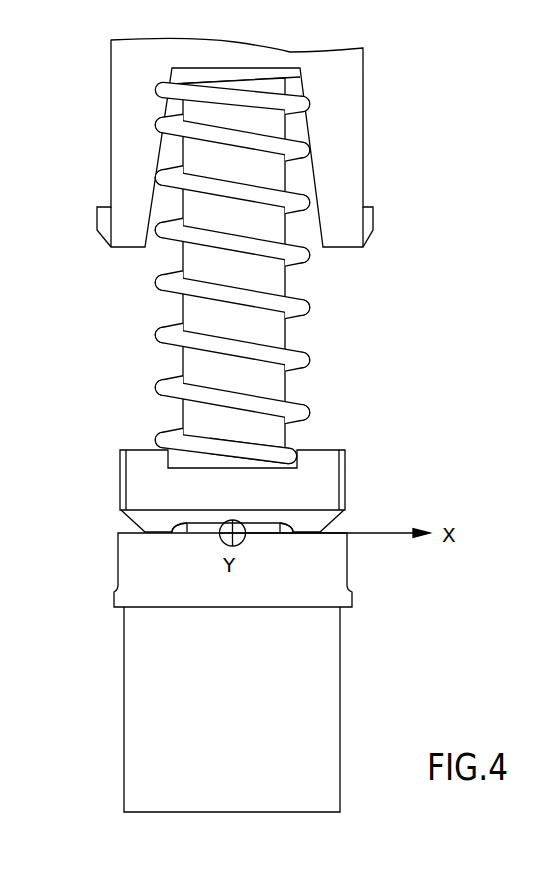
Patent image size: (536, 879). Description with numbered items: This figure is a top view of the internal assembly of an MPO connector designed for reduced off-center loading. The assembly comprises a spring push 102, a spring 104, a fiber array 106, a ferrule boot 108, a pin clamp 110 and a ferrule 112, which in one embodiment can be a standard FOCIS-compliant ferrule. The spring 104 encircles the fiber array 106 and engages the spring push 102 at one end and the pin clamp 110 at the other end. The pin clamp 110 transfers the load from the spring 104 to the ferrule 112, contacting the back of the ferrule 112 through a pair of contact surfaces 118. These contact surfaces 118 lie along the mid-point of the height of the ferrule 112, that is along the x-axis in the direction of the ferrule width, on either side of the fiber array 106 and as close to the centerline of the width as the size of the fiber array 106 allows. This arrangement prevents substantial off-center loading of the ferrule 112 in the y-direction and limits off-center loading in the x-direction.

The spring push 102 is at (345, 130).
The spring 104 is at (310, 306).
The fiber array 106 is at (200, 308).
The ferrule boot 108 is at (292, 443).
The pin clamp 110 is at (333, 477).
The ferrule 112 is at (305, 690).
The contact surfaces 118 is at (167, 533).